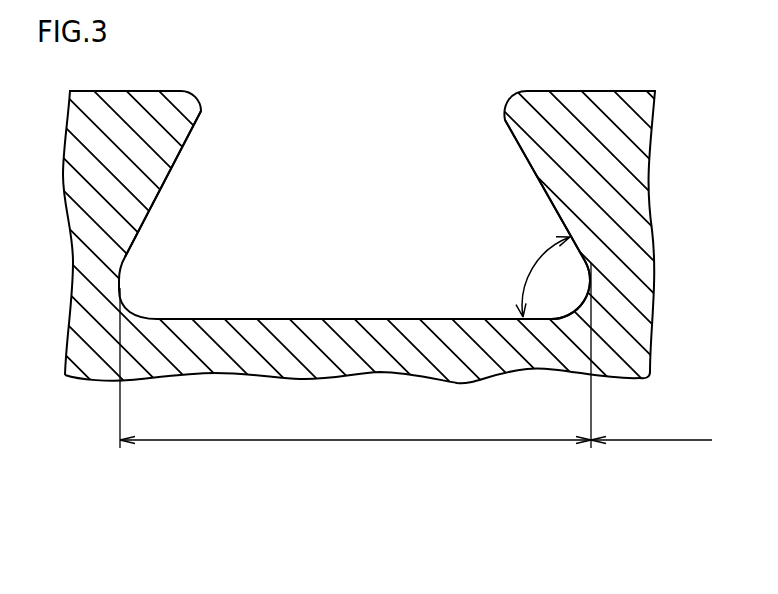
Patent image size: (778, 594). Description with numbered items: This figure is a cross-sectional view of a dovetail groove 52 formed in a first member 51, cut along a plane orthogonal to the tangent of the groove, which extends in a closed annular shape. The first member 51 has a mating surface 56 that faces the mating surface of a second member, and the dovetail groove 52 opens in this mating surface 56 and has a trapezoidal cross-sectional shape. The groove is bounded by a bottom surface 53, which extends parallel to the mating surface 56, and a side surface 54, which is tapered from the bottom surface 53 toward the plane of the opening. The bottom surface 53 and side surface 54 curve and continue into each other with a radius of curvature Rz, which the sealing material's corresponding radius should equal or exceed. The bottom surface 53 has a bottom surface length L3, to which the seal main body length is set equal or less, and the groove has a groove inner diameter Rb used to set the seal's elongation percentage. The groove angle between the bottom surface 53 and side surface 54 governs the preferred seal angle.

The first member 51 is at (105, 110).
The dovetail groove 52 is at (207, 144).
The bottom surface 53 is at (355, 319).
The side surface 54 is at (556, 190).
The mating surface 56 is at (632, 91).
The radius of curvature Rz is at (571, 282).
The bottom surface length L3 is at (357, 441).
The groove inner diameter Rb is at (659, 440).